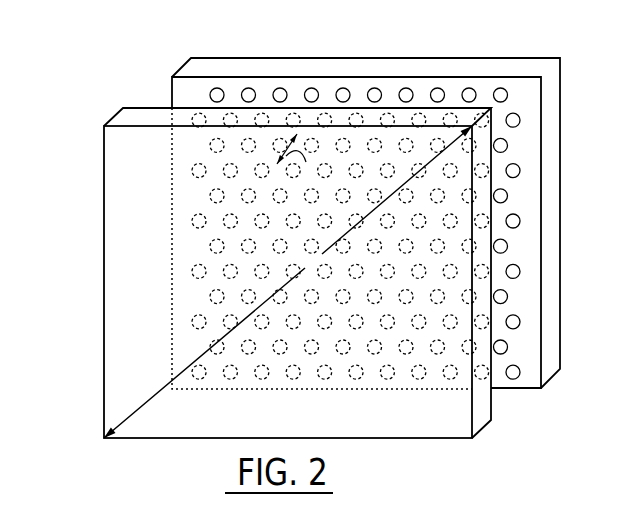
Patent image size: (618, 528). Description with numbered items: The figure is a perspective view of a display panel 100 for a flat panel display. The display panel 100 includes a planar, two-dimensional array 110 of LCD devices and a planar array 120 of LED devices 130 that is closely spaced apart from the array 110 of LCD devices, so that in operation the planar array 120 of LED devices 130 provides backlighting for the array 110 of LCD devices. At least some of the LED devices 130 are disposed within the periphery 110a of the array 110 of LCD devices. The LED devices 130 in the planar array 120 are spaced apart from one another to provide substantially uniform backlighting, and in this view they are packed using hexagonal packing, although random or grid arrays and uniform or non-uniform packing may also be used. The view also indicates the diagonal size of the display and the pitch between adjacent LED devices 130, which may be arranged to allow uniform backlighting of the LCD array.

The display panel 100 is at (133, 92).
The planar array of LCD devices 110 is at (103, 248).
The periphery of the array of LCD devices 110a is at (152, 118).
The planar array of LED devices 120 is at (432, 67).
The LED devices 130 is at (343, 88).